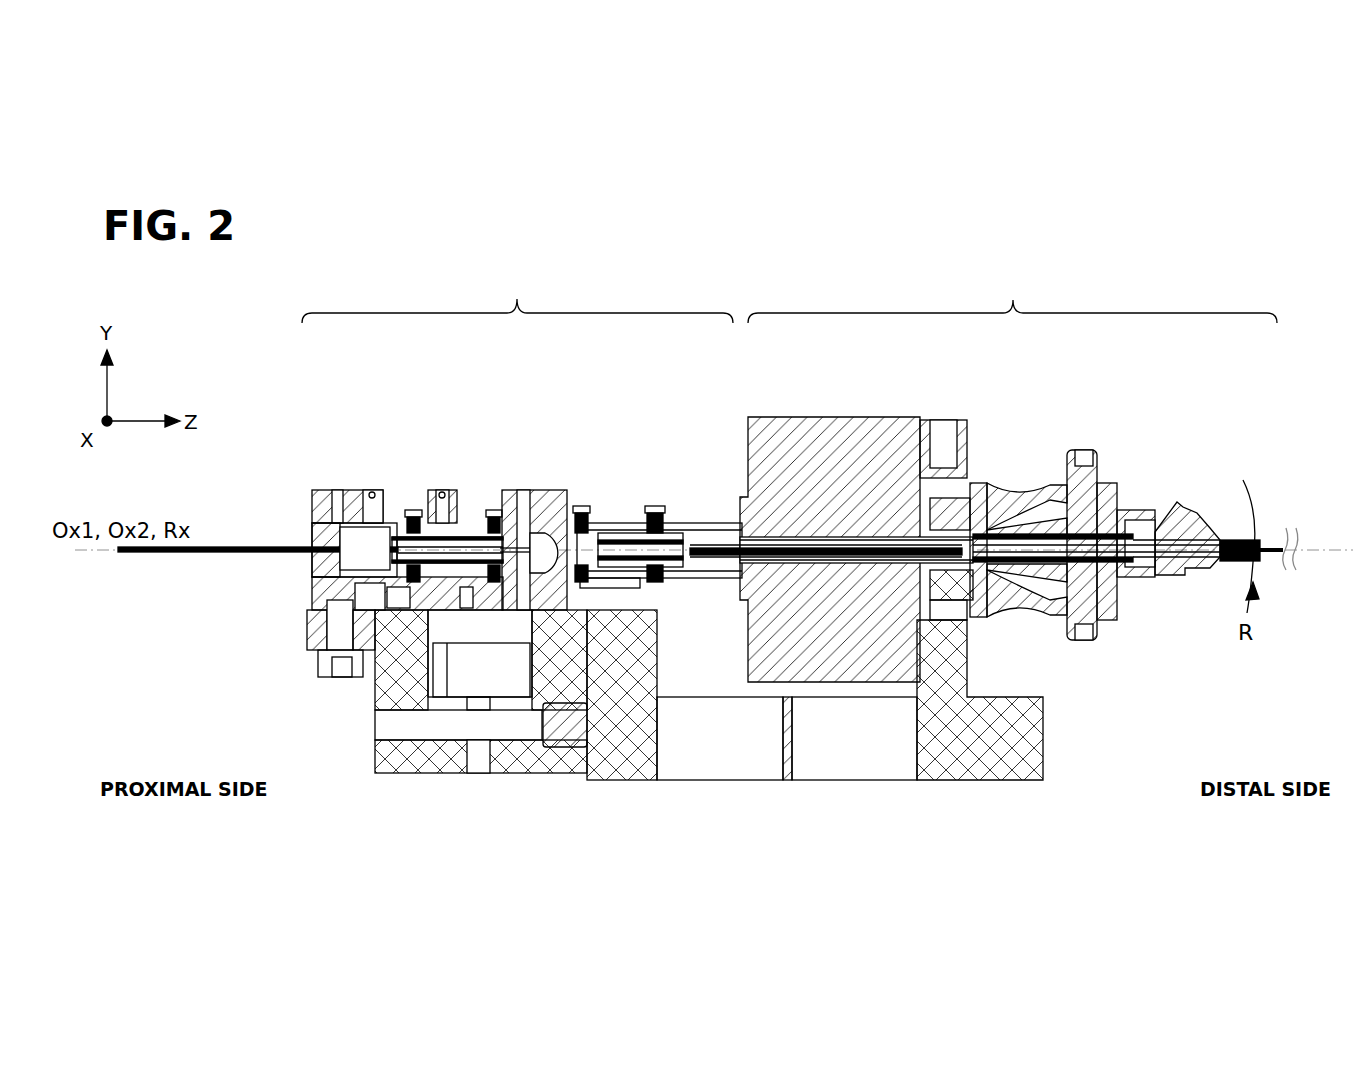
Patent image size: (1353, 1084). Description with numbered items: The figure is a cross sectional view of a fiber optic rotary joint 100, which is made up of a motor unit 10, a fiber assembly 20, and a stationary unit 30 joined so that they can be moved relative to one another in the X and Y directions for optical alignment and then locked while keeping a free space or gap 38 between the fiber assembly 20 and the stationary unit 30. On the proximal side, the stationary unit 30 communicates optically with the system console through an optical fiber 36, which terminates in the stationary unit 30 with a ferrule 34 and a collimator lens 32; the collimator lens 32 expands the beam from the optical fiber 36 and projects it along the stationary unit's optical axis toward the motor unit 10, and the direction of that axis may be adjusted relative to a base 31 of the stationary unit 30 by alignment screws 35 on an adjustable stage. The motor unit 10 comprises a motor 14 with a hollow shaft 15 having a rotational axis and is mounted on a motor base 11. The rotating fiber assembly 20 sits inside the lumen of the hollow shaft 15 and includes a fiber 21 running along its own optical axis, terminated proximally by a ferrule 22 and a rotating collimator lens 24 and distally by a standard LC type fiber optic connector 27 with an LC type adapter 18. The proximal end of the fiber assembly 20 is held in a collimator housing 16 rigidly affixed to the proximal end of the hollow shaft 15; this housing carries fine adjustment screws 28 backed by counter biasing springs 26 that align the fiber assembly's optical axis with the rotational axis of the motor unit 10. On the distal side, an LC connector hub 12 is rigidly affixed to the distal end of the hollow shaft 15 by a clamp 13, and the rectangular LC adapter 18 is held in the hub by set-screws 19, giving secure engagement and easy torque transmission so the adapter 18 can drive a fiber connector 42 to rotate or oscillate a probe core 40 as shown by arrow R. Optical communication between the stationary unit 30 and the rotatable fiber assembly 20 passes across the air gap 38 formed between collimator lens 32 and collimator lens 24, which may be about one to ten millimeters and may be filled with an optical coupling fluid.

The fiber optic rotary joint 100 is at (722, 260).
The motor unit 10 is at (1012, 294).
The stationary unit 30 is at (517, 294).
The motor base 11 is at (1022, 753).
The LC connector hub 12 is at (1105, 480).
The clamp 13 is at (940, 513).
The motor 14 is at (893, 500).
The hollow shaft 15 is at (830, 540).
The collimator housing 16 is at (697, 523).
The LC type adapter 18 is at (1140, 505).
The set-screws 19 is at (1083, 488).
The fiber assembly 20 is at (775, 545).
The fiber 21 is at (703, 555).
The ferrule 22 is at (620, 540).
The rotating collimator lens 24 is at (590, 560).
The counter biasing springs 26 is at (598, 585).
The LC type fiber optic connector 27 is at (1000, 533).
The fine adjustment screws 28 is at (655, 520).
The base 31 is at (397, 763).
The collimator lens 32 is at (483, 547).
The ferrule 34 is at (447, 550).
The alignment screws 35 is at (408, 515).
The optical fiber 36 is at (247, 548).
The air gap 38 is at (535, 535).
The probe core 40 is at (1280, 545).
The fiber connector 42 is at (1200, 520).